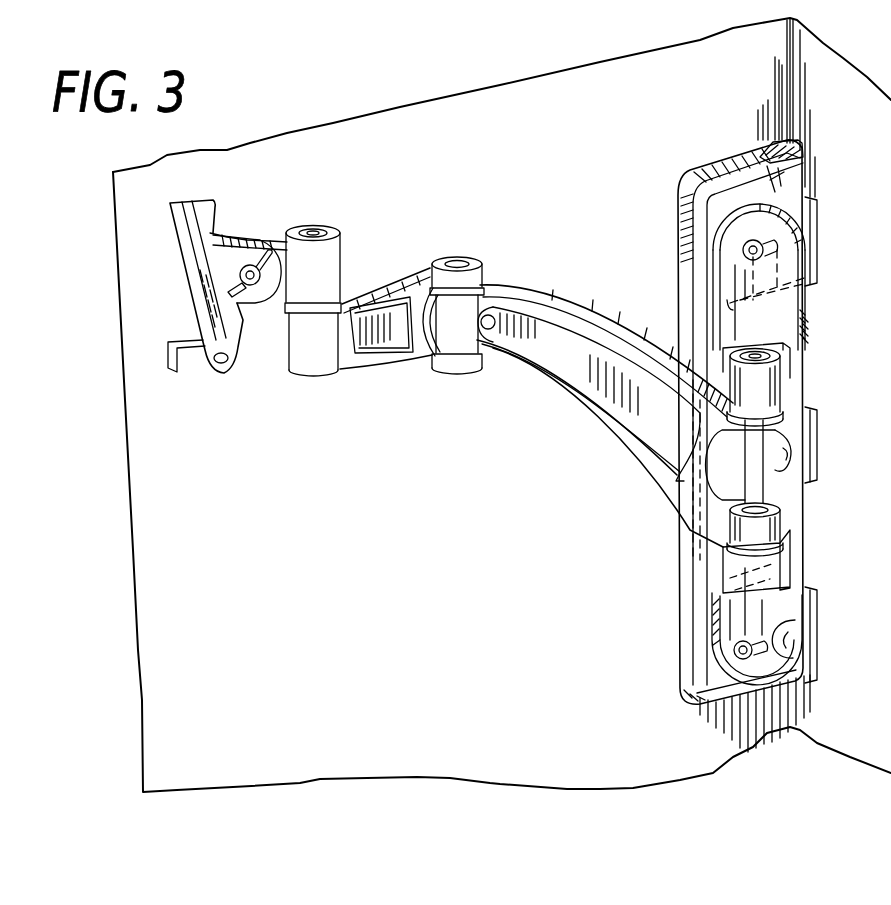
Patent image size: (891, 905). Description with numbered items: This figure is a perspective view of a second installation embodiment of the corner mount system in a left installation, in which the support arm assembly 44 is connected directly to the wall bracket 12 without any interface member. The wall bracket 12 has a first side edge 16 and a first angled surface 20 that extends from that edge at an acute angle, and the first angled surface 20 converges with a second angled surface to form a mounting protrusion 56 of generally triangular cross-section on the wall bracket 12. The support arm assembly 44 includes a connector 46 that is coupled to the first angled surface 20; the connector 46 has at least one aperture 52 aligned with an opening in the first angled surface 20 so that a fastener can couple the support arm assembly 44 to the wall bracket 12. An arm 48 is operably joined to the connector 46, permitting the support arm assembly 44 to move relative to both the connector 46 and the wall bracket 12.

The wall bracket 12 is at (752, 166).
The first side edge 16 is at (680, 202).
The first angled surface 20 is at (737, 195).
The mounting protrusion 56 is at (818, 208).
The aperture 52 is at (778, 245).
The arm 48 is at (543, 297).
The support arm assembly 44 is at (505, 378).
The connector 46 is at (723, 619).